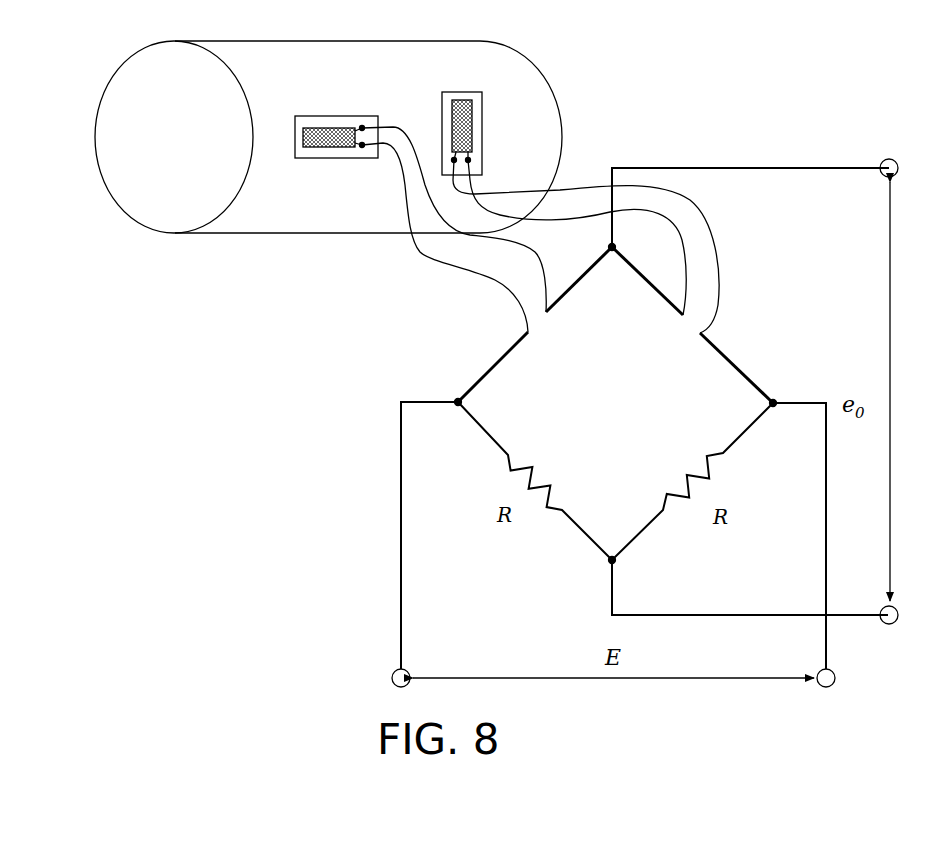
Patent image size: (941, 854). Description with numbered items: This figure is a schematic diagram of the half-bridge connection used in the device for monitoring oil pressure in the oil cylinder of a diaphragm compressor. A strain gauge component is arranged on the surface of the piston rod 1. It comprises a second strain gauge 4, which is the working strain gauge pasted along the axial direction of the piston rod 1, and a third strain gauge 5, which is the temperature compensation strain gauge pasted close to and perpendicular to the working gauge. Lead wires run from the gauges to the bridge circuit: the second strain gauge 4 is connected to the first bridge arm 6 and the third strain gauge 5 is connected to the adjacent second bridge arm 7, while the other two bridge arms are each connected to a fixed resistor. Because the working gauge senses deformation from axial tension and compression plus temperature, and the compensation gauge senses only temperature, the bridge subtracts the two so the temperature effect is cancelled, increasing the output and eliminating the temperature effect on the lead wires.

The piston rod 1 is at (173, 98).
The second strain gauge 4 is at (352, 157).
The third strain gauge 5 is at (478, 98).
The first bridge arm 6 is at (488, 372).
The second bridge arm 7 is at (723, 355).